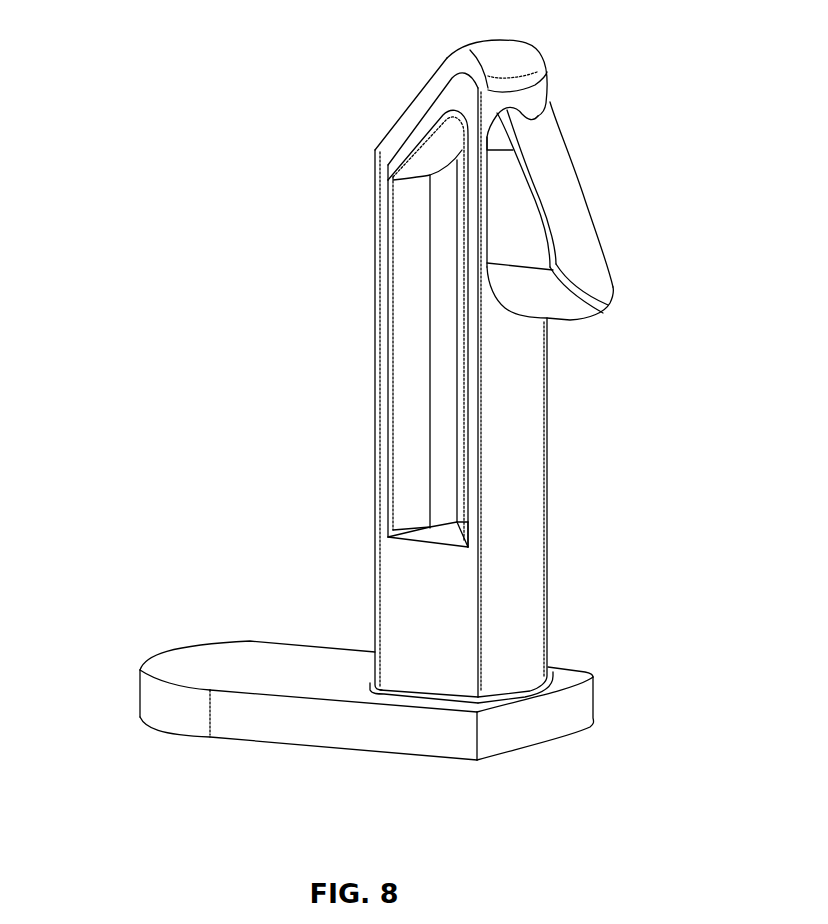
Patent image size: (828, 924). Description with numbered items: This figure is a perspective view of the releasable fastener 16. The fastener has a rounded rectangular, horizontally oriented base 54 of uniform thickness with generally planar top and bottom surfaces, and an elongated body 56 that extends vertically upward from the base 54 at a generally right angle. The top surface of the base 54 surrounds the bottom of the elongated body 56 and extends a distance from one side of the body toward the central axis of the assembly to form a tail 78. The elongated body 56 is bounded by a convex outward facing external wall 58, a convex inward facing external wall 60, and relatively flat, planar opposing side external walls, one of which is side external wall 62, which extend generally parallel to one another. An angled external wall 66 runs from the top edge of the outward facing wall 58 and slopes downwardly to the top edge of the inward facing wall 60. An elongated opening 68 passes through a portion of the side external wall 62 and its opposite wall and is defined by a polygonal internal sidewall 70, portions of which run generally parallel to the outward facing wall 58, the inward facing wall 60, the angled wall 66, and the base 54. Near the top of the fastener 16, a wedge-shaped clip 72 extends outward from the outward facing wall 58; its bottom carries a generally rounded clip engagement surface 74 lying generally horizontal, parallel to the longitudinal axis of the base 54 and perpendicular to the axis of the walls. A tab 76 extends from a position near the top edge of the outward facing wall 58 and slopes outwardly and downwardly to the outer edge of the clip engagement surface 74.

The releasable fastener 16 is at (157, 101).
The base 54 is at (308, 733).
The elongated body 56 is at (548, 480).
The outward facing external wall 58 is at (527, 553).
The inward facing external wall 60 is at (372, 437).
The side external wall 62 is at (397, 580).
The angled external wall 66 is at (413, 102).
The elongated opening 68 is at (458, 322).
The polygonal internal sidewall 70 is at (408, 485).
The wedge-shaped clip 72 is at (593, 273).
The clip engagement surface 74 is at (563, 322).
The tab 76 is at (567, 173).
The tail 78 is at (222, 655).